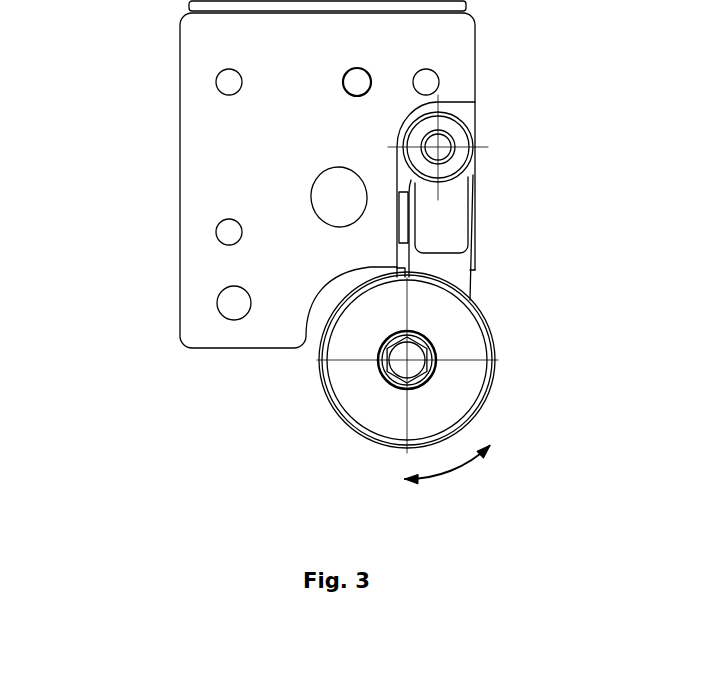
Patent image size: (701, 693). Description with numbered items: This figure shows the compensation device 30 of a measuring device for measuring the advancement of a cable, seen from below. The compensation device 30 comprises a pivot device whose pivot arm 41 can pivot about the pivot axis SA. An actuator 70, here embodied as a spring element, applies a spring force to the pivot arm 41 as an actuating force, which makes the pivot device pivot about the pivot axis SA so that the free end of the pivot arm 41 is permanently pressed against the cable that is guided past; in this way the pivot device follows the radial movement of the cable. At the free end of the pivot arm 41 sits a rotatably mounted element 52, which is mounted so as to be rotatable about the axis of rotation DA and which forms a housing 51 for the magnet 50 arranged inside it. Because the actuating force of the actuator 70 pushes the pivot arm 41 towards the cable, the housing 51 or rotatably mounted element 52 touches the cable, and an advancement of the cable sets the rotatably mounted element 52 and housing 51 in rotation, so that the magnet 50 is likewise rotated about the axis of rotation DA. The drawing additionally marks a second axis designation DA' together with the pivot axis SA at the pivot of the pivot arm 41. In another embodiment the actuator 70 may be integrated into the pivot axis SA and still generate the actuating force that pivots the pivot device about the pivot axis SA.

The compensation device 30 is at (97, 63).
The pivot arm 41 is at (497, 194).
The pivot axis SA is at (497, 144).
The offset rotation axis DA' is at (497, 144).
The actuator 70 is at (415, 209).
The magnet 50 is at (435, 378).
The housing 51 is at (465, 360).
The rotatably mounted element 52 is at (499, 398).
The axis of rotation DA is at (378, 365).